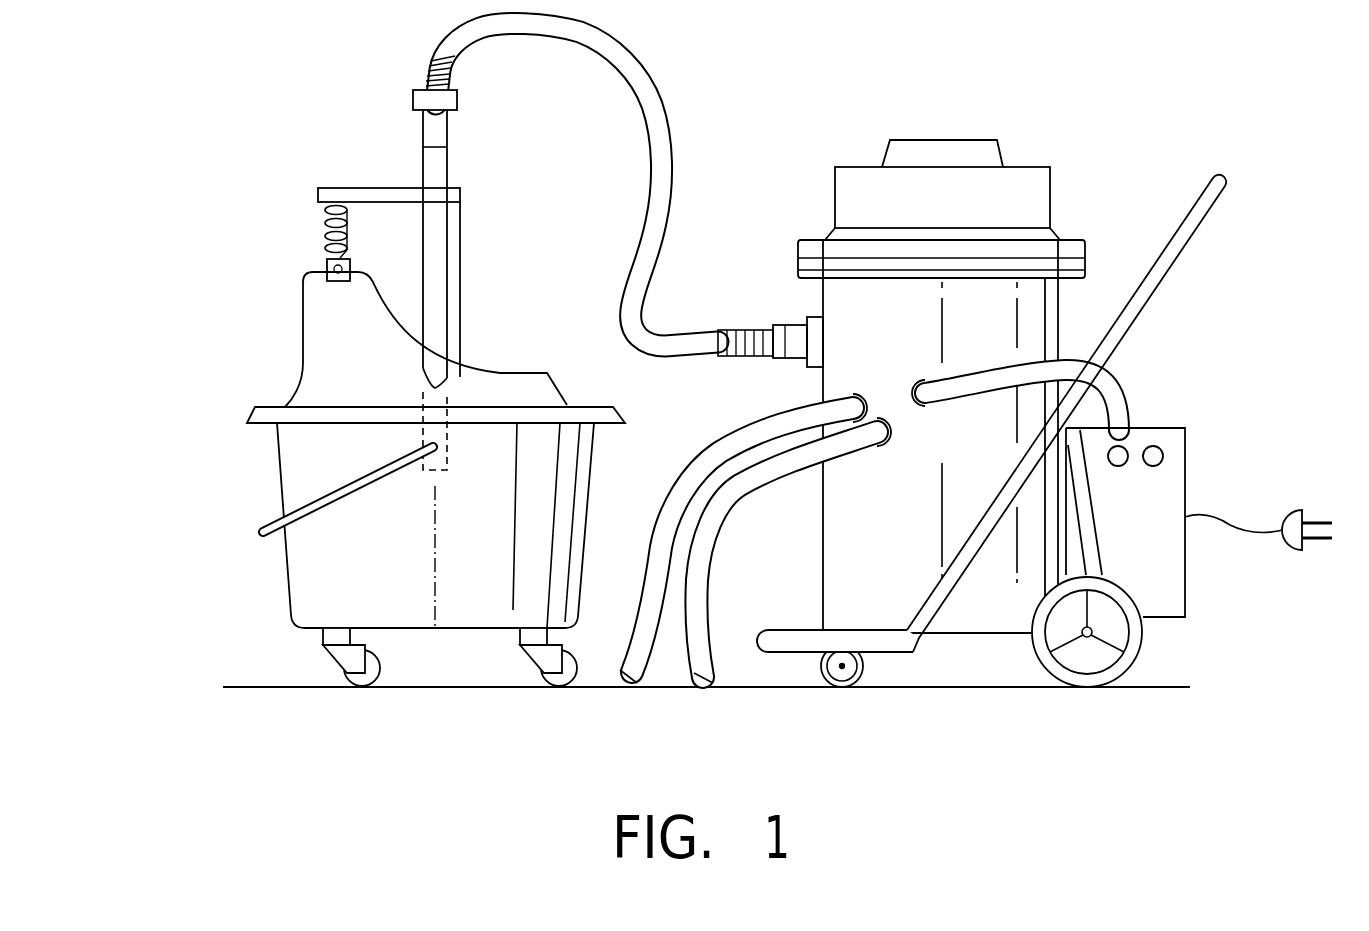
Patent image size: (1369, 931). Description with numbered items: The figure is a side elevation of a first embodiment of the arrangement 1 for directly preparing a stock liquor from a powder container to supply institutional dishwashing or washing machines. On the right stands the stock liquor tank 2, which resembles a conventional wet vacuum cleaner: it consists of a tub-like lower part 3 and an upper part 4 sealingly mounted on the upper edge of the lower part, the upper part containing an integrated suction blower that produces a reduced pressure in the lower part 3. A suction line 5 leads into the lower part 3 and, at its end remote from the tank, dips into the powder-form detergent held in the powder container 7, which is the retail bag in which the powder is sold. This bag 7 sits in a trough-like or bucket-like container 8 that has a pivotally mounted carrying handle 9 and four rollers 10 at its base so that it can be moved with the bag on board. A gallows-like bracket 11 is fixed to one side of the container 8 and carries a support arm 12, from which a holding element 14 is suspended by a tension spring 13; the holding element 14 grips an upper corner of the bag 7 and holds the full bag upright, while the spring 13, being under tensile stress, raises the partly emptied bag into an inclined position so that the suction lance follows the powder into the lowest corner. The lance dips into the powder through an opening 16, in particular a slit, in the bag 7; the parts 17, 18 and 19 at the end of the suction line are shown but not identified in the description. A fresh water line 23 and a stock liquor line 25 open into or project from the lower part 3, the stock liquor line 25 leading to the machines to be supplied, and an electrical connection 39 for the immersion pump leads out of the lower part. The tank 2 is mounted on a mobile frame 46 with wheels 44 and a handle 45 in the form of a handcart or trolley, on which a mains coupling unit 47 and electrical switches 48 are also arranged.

The arrangement 1 is at (736, 218).
The stock liquor tank 2 is at (1065, 224).
The lower part 3 is at (1047, 330).
The upper part 4 is at (938, 150).
The suction line 5 is at (633, 77).
The powder container (bag) 7 is at (317, 315).
The bucket-like container 8 is at (300, 463).
The carrying handle 9 is at (265, 528).
The rollers 10 is at (365, 689).
The gallows-like bracket 11 is at (452, 197).
The support arm 12 is at (387, 195).
The tension spring 13 is at (328, 220).
The holding element 14 is at (318, 263).
The opening 16 is at (447, 375).
The wand upper section 17 is at (437, 135).
The hose coupling 18 is at (456, 100).
The suction wand 19 is at (437, 167).
The fresh water line 23 is at (728, 438).
The stock liquor line 25 is at (712, 694).
The electrical connection 39 is at (993, 399).
The wheels 44 is at (846, 690).
The handle 45 is at (1218, 185).
The mobile frame 46 is at (915, 652).
The mains coupling unit 47 is at (1207, 515).
The electrical switches 48 is at (1122, 446).